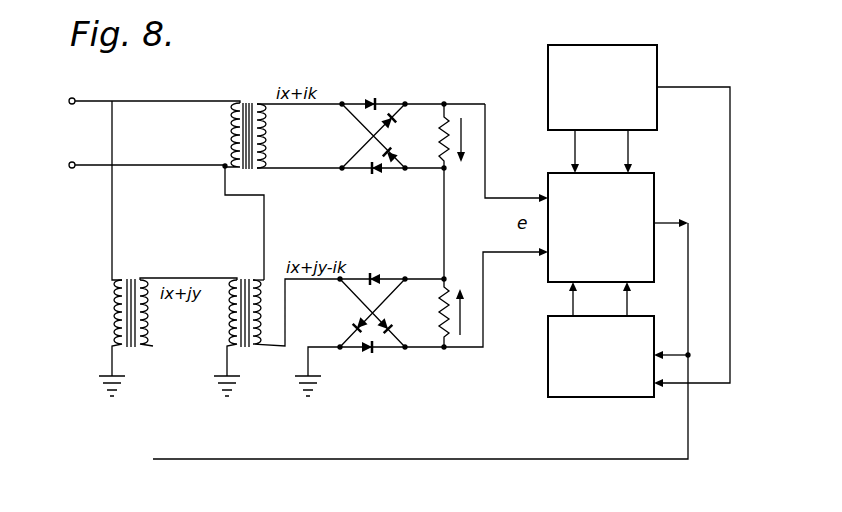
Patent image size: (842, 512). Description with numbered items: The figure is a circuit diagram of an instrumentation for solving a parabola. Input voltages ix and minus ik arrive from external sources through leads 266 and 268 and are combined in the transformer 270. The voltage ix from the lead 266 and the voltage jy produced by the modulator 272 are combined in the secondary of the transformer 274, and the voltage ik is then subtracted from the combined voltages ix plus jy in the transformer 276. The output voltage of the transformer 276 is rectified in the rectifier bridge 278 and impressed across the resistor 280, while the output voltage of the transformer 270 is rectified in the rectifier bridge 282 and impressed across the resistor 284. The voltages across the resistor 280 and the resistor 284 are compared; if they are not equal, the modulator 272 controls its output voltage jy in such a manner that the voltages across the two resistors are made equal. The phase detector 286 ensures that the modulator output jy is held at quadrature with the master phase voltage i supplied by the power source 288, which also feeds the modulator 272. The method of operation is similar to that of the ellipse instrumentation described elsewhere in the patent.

The lead 266 is at (76, 106).
The lead 268 is at (172, 165).
The transformer 270 is at (256, 91).
The modulator 272 is at (651, 185).
The transformer 274 is at (143, 259).
The transformer 276 is at (243, 270).
The rectifier bridge 278 is at (359, 312).
The resistor 280 is at (442, 290).
The rectifier bridge 282 is at (362, 137).
The resistor 284 is at (444, 120).
The phase detector 286 is at (558, 384).
The power source 288 is at (595, 50).